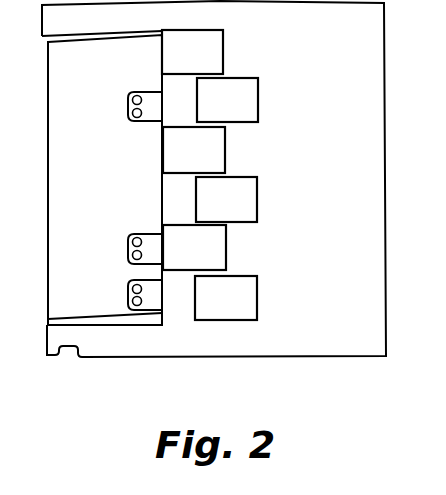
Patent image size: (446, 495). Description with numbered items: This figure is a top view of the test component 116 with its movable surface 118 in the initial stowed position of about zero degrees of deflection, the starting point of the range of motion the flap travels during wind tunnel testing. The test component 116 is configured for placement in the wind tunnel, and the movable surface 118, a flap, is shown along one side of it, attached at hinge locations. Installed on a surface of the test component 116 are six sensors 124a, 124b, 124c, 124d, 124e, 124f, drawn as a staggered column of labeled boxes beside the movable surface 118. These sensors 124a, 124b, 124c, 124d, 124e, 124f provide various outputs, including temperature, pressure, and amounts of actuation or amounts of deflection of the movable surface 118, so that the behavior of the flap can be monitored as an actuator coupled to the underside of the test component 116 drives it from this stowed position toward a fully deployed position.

The test component 116 is at (347, 338).
The movable surface 118 is at (85, 300).
The sensor 124a is at (192, 52).
The sensor 124b is at (227, 100).
The sensor 124c is at (194, 150).
The sensor 124d is at (226, 199).
The sensor 124e is at (194, 247).
The sensor 124f is at (226, 298).